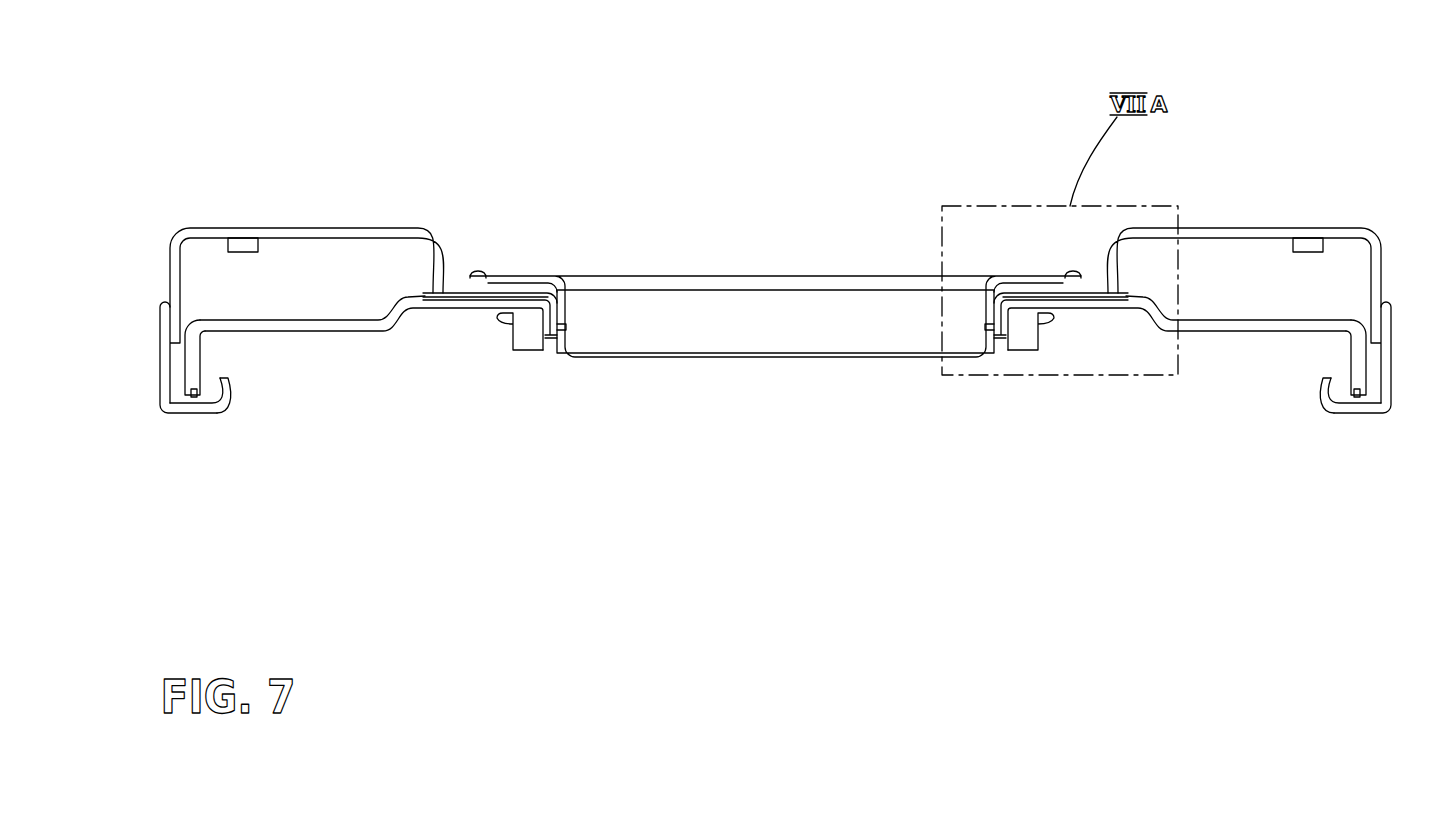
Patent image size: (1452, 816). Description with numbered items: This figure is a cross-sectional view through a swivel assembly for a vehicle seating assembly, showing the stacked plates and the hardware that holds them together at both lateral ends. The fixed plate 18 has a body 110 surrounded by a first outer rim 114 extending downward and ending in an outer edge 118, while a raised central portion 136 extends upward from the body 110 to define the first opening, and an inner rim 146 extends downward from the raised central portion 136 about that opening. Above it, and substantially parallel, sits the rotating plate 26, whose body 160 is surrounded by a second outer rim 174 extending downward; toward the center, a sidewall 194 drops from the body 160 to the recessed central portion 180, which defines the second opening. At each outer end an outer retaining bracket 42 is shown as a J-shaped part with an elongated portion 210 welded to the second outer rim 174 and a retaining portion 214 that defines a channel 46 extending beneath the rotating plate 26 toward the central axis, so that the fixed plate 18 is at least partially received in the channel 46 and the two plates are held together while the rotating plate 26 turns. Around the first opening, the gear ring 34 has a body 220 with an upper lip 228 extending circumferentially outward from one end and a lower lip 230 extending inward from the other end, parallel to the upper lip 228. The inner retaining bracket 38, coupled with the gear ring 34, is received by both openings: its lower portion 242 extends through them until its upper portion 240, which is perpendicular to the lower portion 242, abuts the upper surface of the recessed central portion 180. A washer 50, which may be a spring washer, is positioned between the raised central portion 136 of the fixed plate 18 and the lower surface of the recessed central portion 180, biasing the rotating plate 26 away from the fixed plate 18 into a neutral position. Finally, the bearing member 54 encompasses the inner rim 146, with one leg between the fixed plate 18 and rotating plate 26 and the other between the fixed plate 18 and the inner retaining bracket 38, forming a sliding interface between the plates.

The fixed plate 18 is at (367, 323).
The rotating plate 26 is at (280, 228).
The gear ring 34 is at (510, 340).
The inner retaining bracket 38 is at (1005, 275).
The outer retaining bracket 42 is at (161, 373).
The channel 46 is at (179, 398).
The washer 50 is at (460, 293).
The bearing member 54 is at (560, 327).
The body 110 is at (284, 330).
The first outer rim 114 is at (195, 357).
The outer edge 118 is at (190, 397).
The raised central portion 136 is at (473, 305).
The inner rim 146 is at (535, 340).
The body 160 is at (316, 228).
The second outer rim 174 is at (177, 262).
The recessed central portion 180 is at (513, 290).
The sidewall 194 is at (458, 293).
The elongated portion 210 is at (162, 322).
The retaining portion 214 is at (211, 412).
The body 220 is at (523, 342).
The upper lip 228 is at (502, 315).
The lower lip 230 is at (541, 352).
The upper portion 240 is at (517, 290).
The lower portion 242 is at (565, 318).